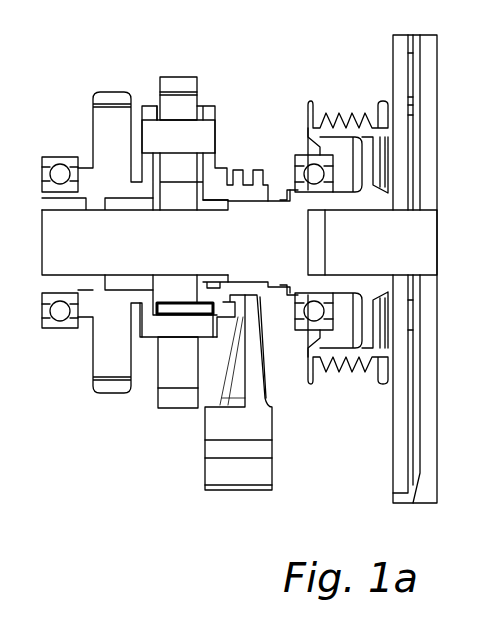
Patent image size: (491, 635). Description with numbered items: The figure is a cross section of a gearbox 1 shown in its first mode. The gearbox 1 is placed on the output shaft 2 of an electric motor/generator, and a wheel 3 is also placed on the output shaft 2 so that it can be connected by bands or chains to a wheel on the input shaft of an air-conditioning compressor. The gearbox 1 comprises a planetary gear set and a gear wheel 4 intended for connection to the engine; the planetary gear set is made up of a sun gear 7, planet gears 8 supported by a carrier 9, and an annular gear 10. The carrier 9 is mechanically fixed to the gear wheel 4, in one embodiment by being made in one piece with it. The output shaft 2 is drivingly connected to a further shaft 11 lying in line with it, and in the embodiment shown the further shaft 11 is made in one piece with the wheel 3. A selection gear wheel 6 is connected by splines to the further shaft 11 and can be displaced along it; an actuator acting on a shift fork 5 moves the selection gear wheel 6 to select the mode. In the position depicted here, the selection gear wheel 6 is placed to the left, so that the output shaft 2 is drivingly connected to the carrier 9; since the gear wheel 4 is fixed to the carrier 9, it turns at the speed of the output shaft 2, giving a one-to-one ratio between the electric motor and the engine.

The gearbox 1 is at (141, 491).
The output shaft 2 is at (428, 232).
The wheel 3 is at (362, 118).
The gear wheel 4 is at (100, 132).
The shift fork 5 is at (240, 473).
The selection gear wheel 6 is at (252, 197).
The sun gear 7 is at (180, 288).
The planet gears 8 is at (186, 106).
The carrier 9 is at (136, 188).
The annular gear 10 is at (178, 80).
The further shaft 11 is at (67, 243).